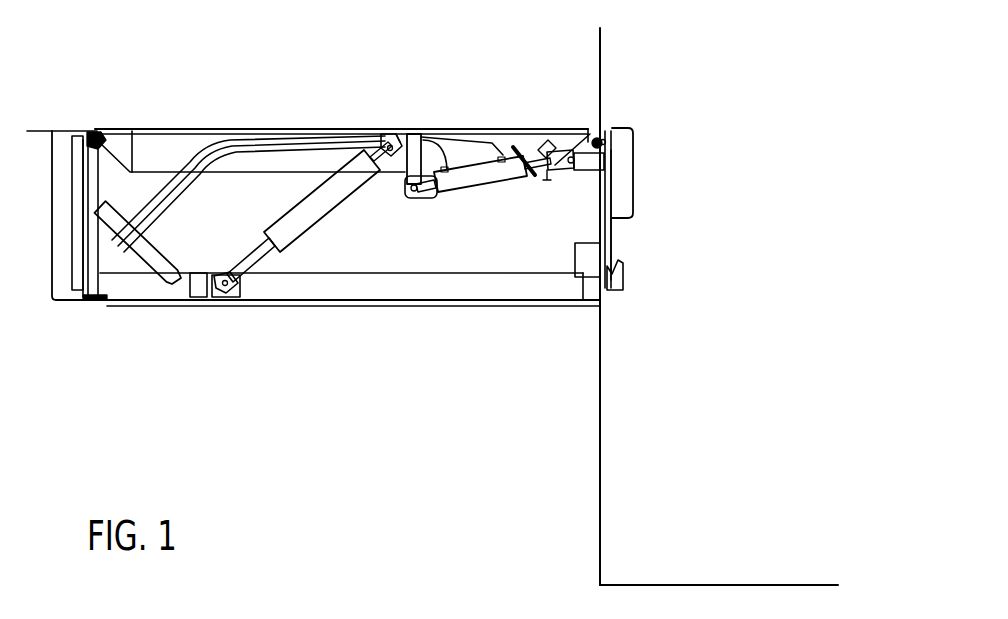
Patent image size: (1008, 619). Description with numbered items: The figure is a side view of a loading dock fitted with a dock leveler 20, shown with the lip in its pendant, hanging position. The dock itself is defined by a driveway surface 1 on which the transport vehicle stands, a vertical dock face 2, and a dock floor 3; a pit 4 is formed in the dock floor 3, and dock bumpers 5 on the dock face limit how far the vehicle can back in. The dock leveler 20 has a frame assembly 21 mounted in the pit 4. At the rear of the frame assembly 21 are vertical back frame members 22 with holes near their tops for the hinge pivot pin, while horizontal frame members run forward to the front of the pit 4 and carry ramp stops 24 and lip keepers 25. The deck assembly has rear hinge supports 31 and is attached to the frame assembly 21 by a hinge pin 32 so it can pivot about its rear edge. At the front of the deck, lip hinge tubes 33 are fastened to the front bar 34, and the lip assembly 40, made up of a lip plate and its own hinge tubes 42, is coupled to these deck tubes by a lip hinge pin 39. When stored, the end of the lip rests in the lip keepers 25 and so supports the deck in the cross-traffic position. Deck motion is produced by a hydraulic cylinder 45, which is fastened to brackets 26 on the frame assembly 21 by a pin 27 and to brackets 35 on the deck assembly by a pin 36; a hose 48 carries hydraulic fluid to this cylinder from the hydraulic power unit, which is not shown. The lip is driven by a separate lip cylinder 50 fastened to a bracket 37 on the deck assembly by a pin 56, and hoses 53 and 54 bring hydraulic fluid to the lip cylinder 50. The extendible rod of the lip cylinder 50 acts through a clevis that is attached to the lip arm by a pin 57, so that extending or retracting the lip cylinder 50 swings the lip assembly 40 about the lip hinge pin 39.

The driveway surface 1 is at (664, 585).
The dock face 2 is at (601, 467).
The dock floor 3 is at (46, 130).
The pit 4 is at (53, 280).
The dock bumpers 5 is at (632, 190).
The dock leveler 20 is at (263, 92).
The frame assembly 21 is at (173, 269).
The vertical back frame members 22 is at (102, 170).
The ramp stops 24 is at (574, 263).
The lip keepers 25 is at (624, 290).
The brackets 26 is at (234, 291).
The pin 27 is at (222, 291).
The rear hinge supports 31 is at (99, 142).
The hinge pin 32 is at (90, 132).
The lip hinge tubes 33 is at (595, 137).
The hinge tubes 42 is at (597, 143).
The front bar 34 is at (589, 175).
The brackets 35 is at (397, 132).
The pin 36 is at (386, 134).
The bracket 37 is at (416, 132).
The lip hinge pin 39 is at (604, 142).
The lip assembly 40 is at (613, 243).
The hydraulic cylinder 45 is at (345, 200).
The hose 48 is at (268, 156).
The lip cylinder 50 is at (483, 193).
The hose 53 is at (427, 133).
The hose 54 is at (480, 132).
The pin 56 is at (412, 199).
The pin 57 is at (578, 172).